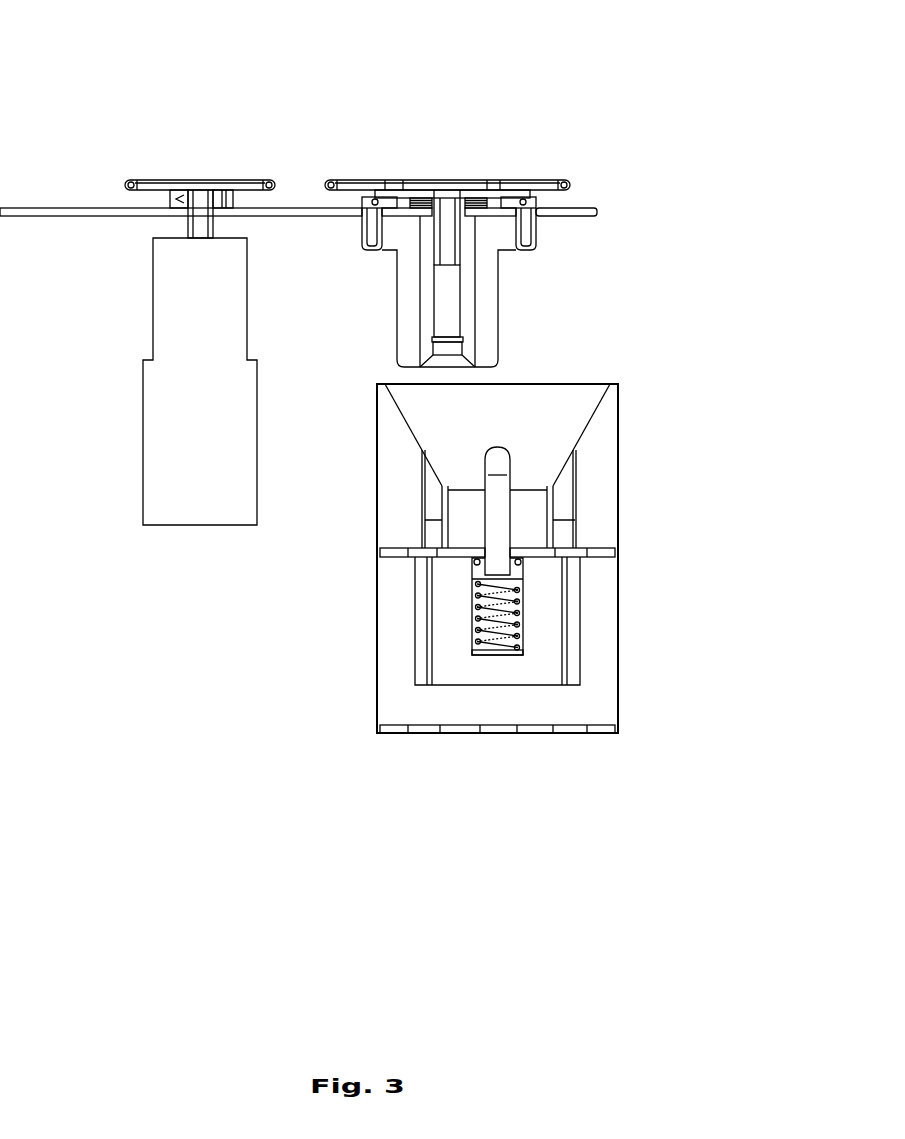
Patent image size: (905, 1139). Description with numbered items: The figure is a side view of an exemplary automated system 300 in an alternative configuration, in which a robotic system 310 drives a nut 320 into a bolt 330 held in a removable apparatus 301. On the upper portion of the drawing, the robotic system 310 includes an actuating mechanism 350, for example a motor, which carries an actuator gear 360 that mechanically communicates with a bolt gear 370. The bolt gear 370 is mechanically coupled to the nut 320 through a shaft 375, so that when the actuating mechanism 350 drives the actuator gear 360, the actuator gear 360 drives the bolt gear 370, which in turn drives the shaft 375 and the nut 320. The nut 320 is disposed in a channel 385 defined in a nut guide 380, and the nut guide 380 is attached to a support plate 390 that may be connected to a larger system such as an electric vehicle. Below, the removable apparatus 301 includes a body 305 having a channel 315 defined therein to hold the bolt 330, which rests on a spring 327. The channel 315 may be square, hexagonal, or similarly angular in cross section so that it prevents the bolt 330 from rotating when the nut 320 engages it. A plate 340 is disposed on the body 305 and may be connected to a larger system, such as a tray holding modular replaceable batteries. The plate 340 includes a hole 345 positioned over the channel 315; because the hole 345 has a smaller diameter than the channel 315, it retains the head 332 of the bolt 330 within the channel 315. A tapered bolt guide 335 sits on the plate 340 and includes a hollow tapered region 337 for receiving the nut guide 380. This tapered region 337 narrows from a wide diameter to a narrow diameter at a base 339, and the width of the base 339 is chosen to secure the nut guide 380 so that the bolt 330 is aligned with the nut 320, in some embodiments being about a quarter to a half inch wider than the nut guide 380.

The automated system 300 is at (124, 44).
The removable apparatus 301 is at (700, 392).
The body 305 is at (621, 696).
The robotic system 310 is at (100, 145).
The channel 315 is at (462, 621).
The nut 320 is at (483, 348).
The spring 327 is at (462, 652).
The bolt 330 is at (473, 531).
The head 332 is at (462, 576).
The tapered bolt guide 335 is at (635, 441).
The hollow tapered region 337 is at (600, 418).
The base 339 is at (382, 406).
The plate 340 is at (627, 548).
The hole 345 is at (518, 541).
The actuating mechanism 350 is at (216, 490).
The actuator gear 360 is at (243, 151).
The bolt gear 370 is at (493, 151).
The shaft 375 is at (464, 304).
The nut guide 380 is at (509, 277).
The channel 385 is at (437, 290).
The support plate 390 is at (618, 211).